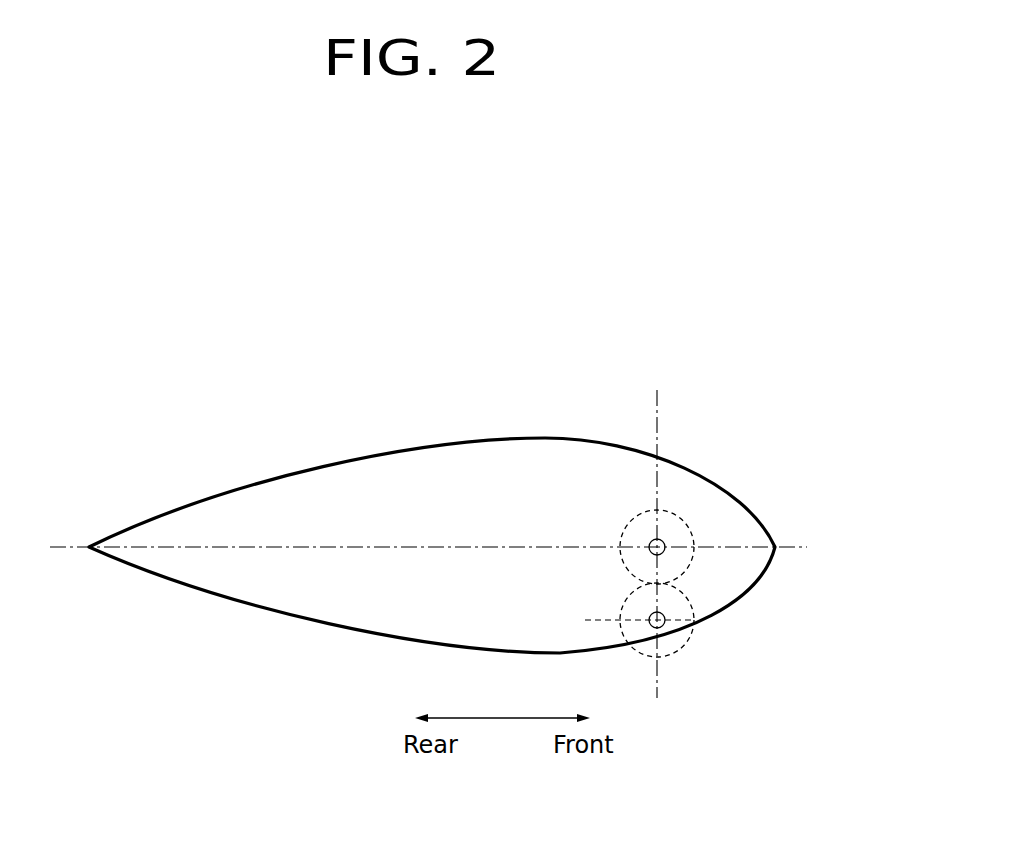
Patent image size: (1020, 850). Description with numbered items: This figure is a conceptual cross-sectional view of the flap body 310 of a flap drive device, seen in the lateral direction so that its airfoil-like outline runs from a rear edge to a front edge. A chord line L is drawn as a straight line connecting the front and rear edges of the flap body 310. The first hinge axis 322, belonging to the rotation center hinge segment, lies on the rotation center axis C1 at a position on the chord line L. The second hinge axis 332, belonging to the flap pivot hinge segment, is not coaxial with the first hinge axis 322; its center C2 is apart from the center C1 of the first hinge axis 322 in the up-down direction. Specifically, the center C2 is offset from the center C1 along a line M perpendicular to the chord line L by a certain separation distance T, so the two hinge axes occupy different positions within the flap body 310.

The flap body 310 is at (518, 432).
The first hinge axis 322 is at (694, 533).
The second hinge axis 332 is at (693, 601).
The rotation center axis C1 is at (664, 540).
The center of the second hinge axis C2 is at (665, 625).
The line perpendicular to the chord line M is at (672, 413).
The chord line L is at (365, 540).
The separation distance T is at (593, 553).